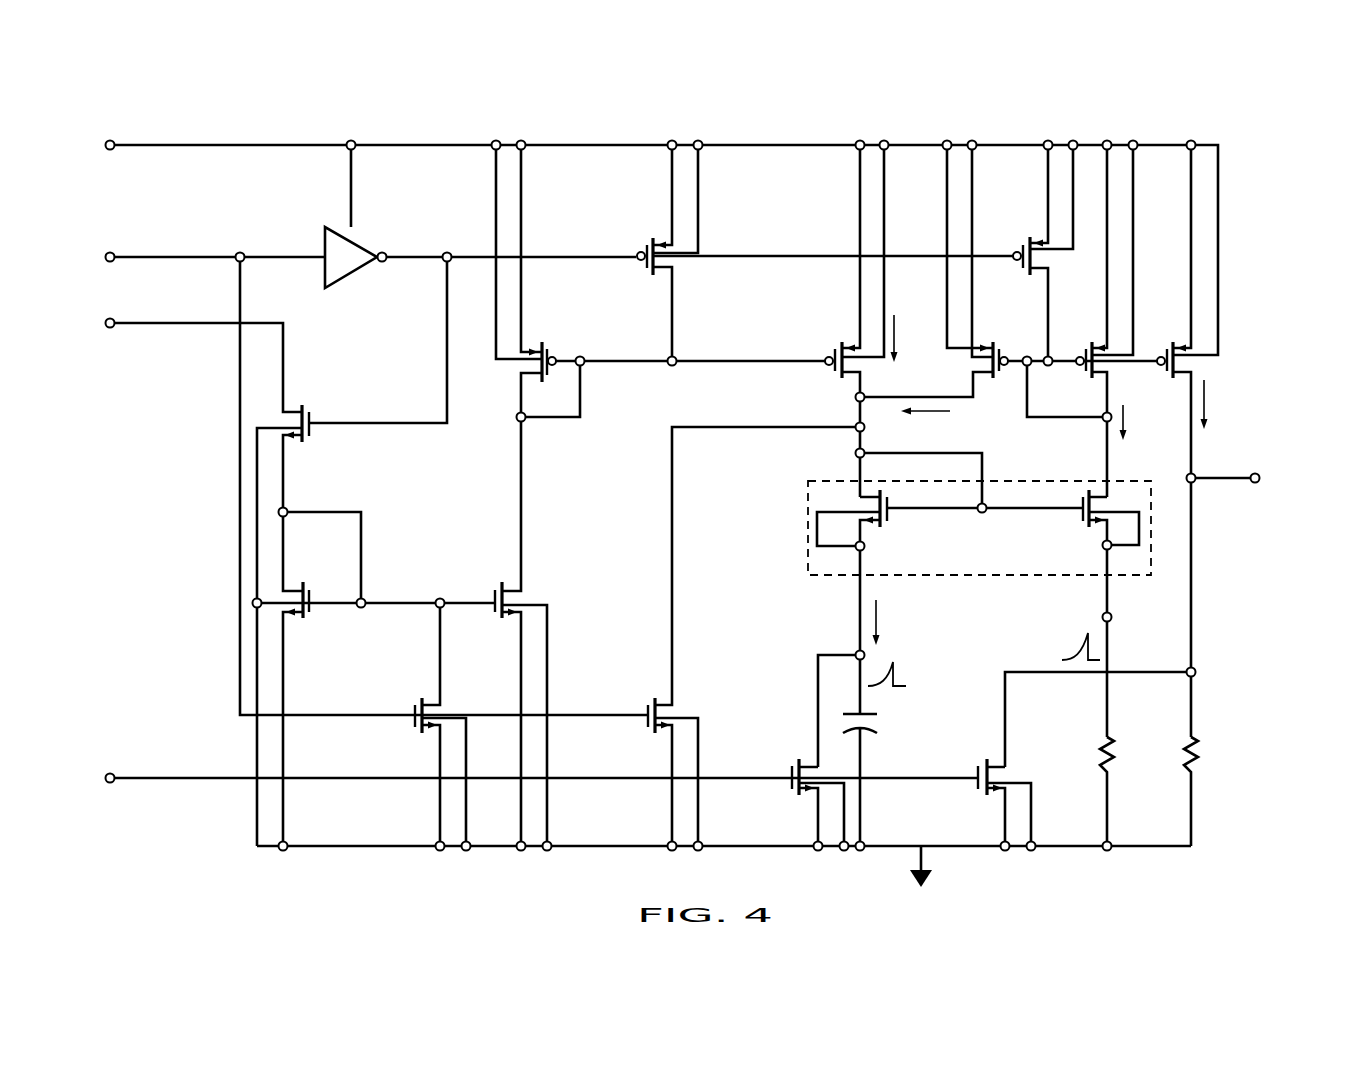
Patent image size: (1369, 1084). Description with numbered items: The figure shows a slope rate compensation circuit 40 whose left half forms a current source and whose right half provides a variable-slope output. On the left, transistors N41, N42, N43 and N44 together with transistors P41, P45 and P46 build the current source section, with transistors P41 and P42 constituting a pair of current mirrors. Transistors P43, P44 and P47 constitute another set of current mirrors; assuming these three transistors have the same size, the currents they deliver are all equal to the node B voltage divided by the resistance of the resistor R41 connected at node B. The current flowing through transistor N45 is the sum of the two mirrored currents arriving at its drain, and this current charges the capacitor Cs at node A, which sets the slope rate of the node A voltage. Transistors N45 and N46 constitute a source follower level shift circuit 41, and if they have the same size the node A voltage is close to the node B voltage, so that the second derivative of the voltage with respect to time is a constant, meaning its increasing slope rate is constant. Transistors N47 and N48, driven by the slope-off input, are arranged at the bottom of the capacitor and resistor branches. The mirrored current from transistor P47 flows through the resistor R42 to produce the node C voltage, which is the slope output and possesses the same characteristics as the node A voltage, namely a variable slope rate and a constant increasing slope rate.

The slope rate compensation circuit 40 is at (1249, 120).
The source follower level shift circuit 41 is at (808, 505).
The transistor N41 is at (305, 679).
The transistor N42 is at (511, 631).
The transistor N43 is at (430, 724).
The transistor N44 is at (309, 625).
The transistor N45 is at (861, 602).
The transistor N46 is at (1102, 613).
The transistor N47 is at (808, 787).
The transistor N48 is at (995, 787).
The transistor P41 is at (533, 281).
The transistor P42 is at (852, 321).
The transistor P43 is at (981, 261).
The transistor P44 is at (1099, 321).
The transistor P45 is at (662, 253).
The transistor P46 is at (1039, 253).
The transistor P47 is at (1170, 441).
The capacitor Cs is at (874, 779).
The resistor R41 is at (1087, 791).
The resistor R42 is at (1171, 791).